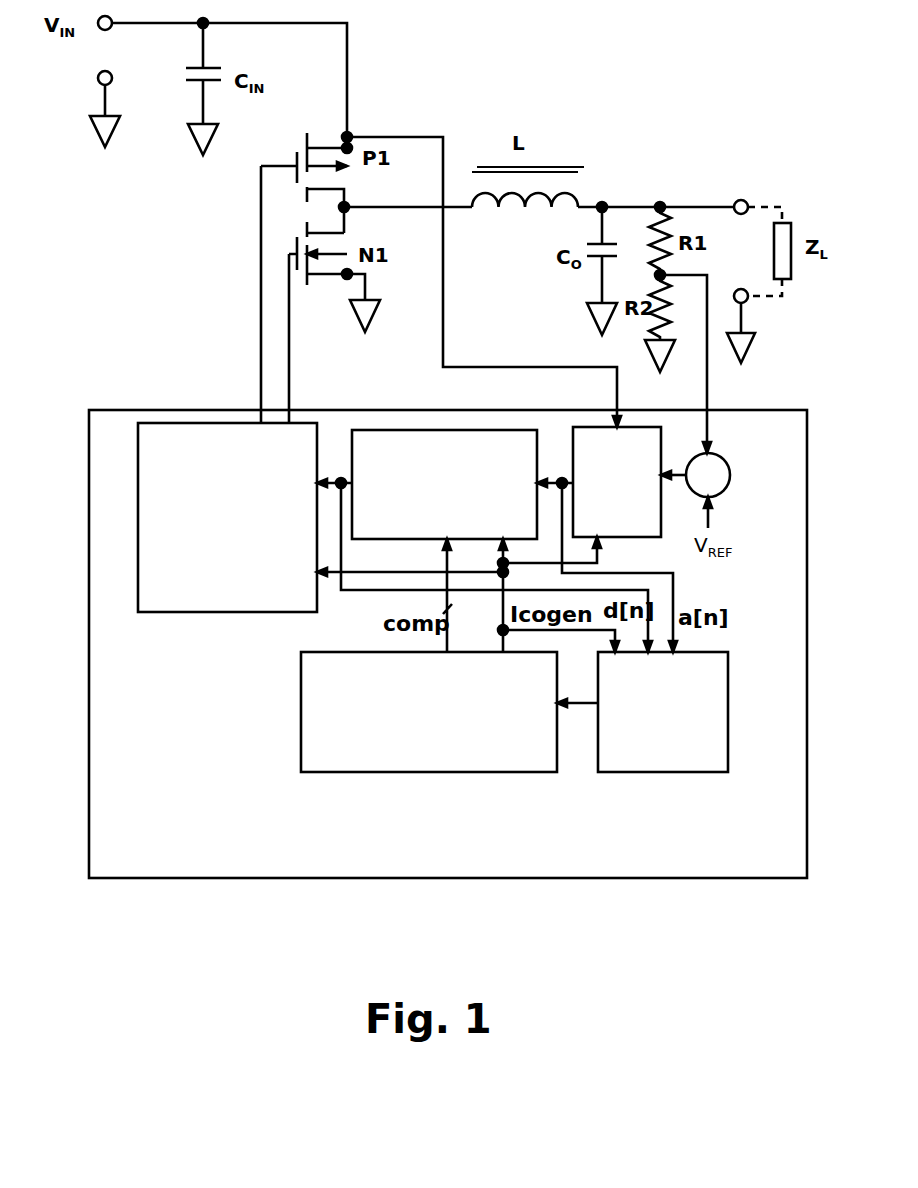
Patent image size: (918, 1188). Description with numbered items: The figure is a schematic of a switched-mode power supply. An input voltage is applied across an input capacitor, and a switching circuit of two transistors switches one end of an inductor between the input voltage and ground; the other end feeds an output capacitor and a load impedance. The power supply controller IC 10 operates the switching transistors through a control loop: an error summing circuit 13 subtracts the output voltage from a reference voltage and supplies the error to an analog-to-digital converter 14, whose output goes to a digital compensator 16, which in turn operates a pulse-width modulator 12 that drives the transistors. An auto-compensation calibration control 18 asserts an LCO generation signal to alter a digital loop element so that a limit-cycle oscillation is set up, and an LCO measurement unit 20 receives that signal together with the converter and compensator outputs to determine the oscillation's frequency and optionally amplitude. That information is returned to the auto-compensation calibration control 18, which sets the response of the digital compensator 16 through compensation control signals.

The power supply controller integrated circuit 10 is at (448, 644).
The pulse-width modulator 12 is at (227, 517).
The error summing circuit 13 is at (730, 477).
The analog-to-digital converter 14 is at (617, 482).
The digital compensator 16 is at (444, 484).
The auto-compensation calibration control 18 is at (429, 712).
The LCO measurement unit 20 is at (663, 712).